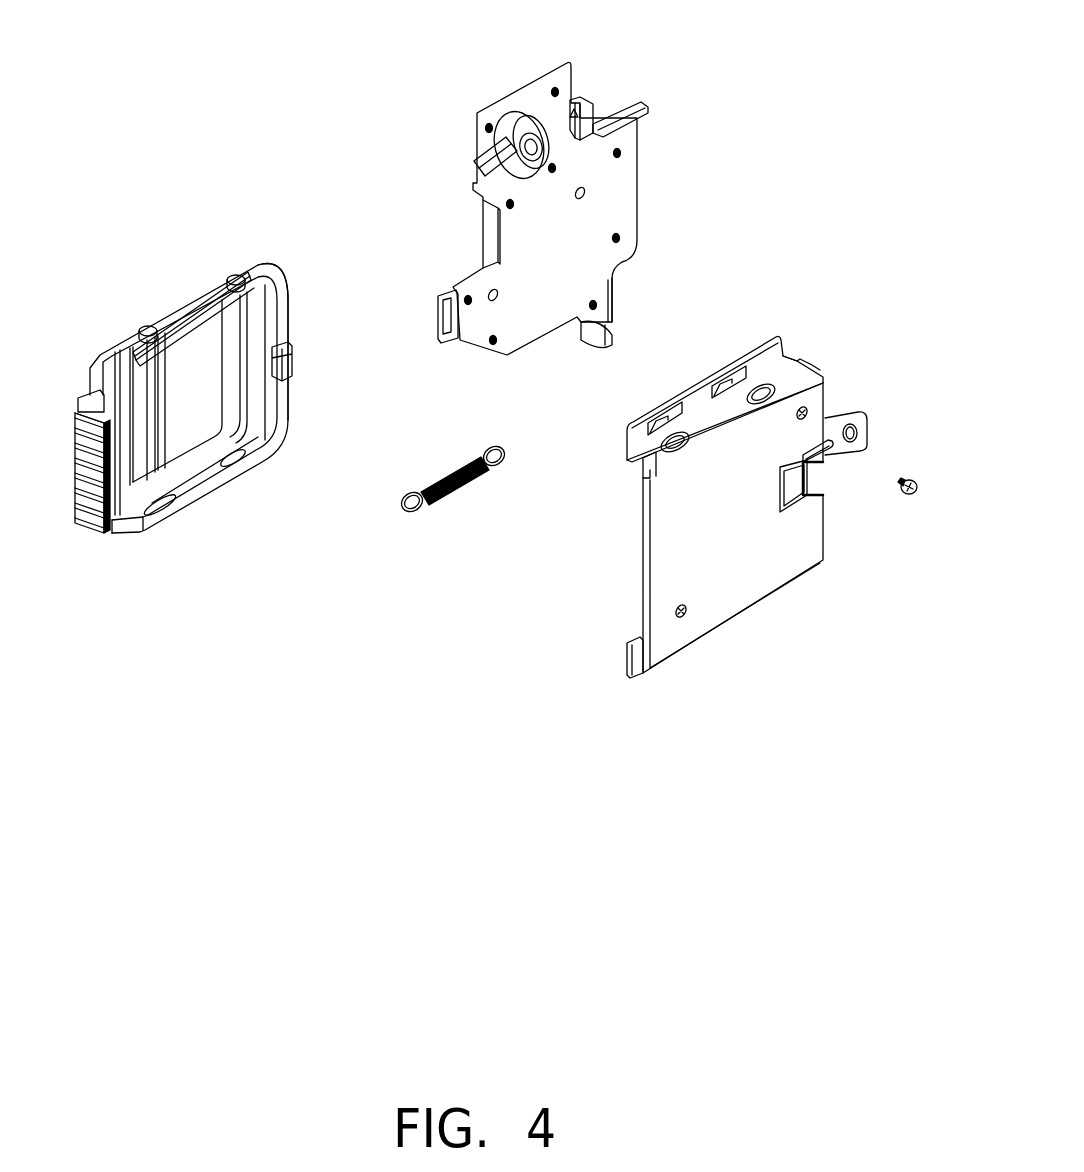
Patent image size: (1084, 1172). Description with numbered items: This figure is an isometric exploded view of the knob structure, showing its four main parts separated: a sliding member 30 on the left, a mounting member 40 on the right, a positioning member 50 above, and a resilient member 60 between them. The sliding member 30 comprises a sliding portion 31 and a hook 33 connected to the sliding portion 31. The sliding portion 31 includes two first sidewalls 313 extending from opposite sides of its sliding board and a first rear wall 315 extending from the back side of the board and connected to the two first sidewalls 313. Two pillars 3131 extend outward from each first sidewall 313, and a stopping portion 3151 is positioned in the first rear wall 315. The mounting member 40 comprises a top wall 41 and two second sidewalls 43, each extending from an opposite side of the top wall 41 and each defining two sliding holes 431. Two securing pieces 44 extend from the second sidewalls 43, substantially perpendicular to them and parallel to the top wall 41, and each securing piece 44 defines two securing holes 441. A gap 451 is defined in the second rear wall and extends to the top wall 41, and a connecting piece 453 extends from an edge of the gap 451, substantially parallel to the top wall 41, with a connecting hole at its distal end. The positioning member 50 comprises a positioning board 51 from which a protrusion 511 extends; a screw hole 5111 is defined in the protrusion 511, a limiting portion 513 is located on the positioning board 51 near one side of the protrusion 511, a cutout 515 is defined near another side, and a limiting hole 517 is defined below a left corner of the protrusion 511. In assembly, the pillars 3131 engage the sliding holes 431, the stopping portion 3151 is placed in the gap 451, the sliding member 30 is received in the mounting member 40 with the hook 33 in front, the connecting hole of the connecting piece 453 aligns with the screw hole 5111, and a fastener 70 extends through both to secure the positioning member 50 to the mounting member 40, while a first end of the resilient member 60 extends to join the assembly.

The sliding member 30 is at (238, 574).
The sliding portion 31 is at (210, 452).
The hook 33 is at (110, 543).
The first sidewalls 313 is at (190, 315).
The pillars 3131 is at (234, 280).
The first rear wall 315 is at (272, 300).
The stopping portion 3151 is at (292, 355).
The mounting member 40 is at (625, 690).
The top wall 41 is at (760, 560).
The second sidewalls 43 is at (790, 375).
The securing pieces 44 is at (633, 447).
The sliding holes 431 is at (760, 393).
The securing holes 441 is at (668, 413).
The gap 451 is at (825, 478).
The connecting piece 453 is at (840, 425).
The positioning member 50 is at (658, 160).
The positioning board 51 is at (612, 205).
The protrusion 511 is at (515, 135).
The screw hole 5111 is at (531, 147).
The limiting portion 513 is at (600, 118).
The cutout 515 is at (497, 155).
The limiting hole 517 is at (450, 300).
The resilient member 60 is at (442, 495).
The fastener 70 is at (905, 477).